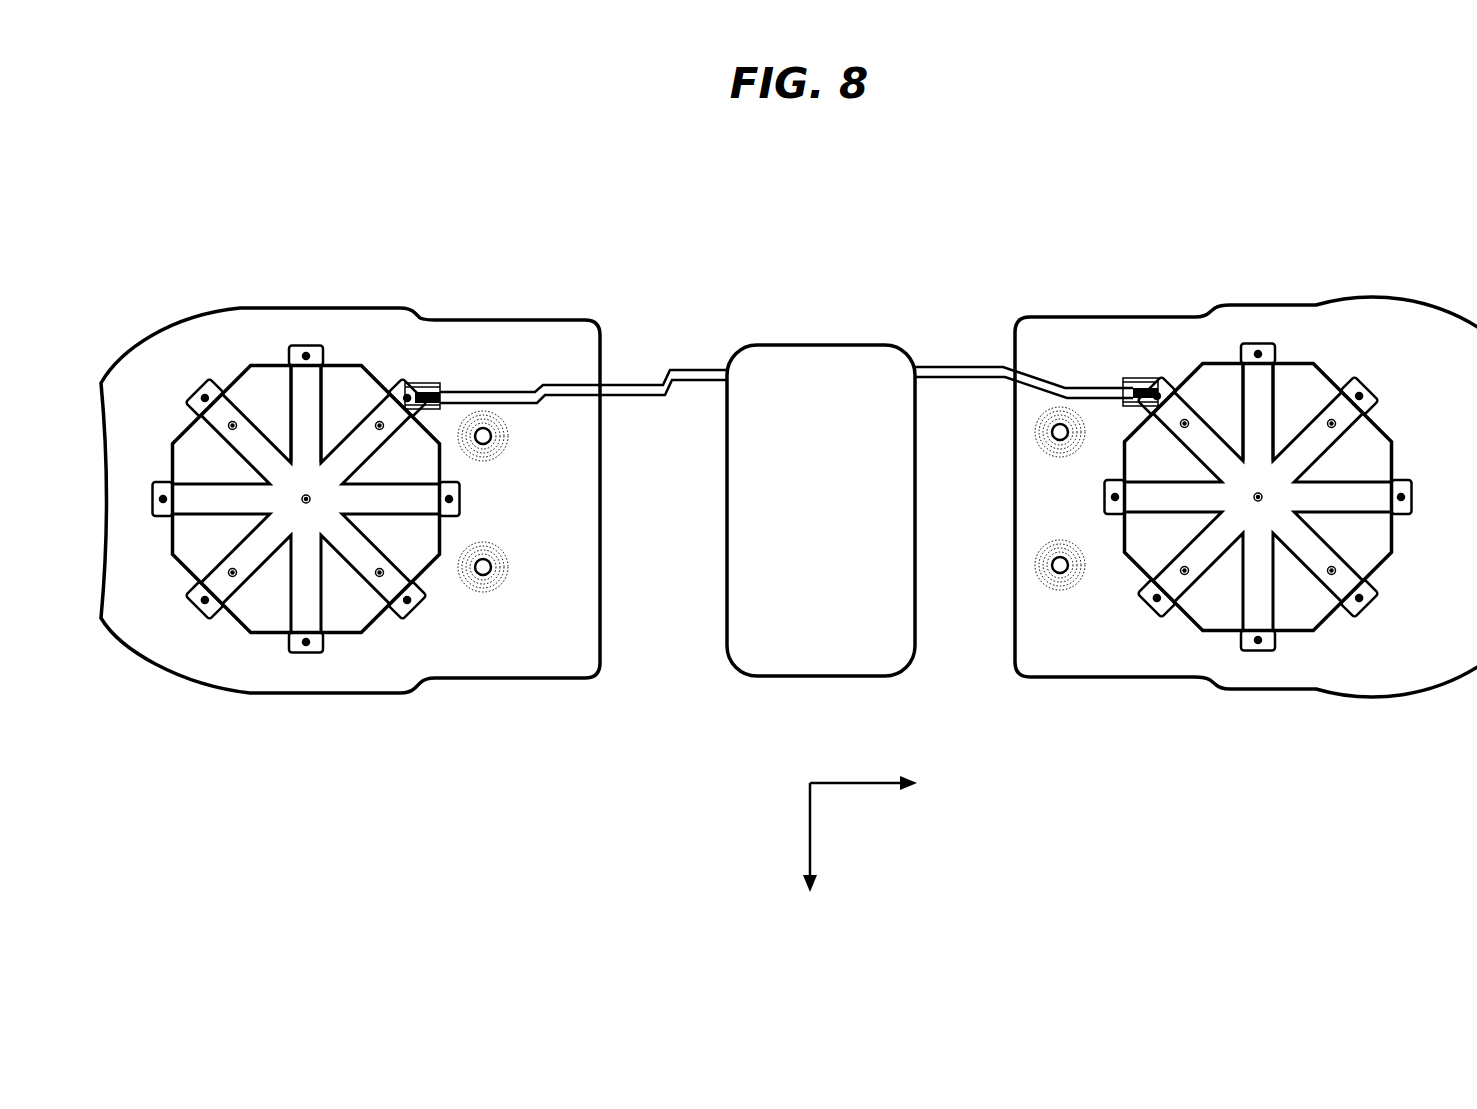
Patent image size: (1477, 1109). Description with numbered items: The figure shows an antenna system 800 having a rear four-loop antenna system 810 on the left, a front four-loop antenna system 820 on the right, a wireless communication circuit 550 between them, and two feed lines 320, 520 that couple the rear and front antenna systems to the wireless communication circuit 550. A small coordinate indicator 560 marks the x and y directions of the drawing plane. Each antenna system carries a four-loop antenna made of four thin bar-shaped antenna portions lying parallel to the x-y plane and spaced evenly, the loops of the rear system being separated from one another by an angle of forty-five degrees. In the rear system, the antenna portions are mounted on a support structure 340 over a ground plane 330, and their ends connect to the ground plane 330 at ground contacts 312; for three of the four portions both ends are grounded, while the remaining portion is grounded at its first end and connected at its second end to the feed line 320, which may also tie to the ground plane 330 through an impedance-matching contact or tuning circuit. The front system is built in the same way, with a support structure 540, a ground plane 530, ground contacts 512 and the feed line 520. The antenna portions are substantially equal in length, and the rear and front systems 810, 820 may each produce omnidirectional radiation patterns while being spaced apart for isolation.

The antenna system 800 is at (790, 246).
The rear four-loop antenna system 810 is at (101, 252).
The front four-loop antenna system 820 is at (1017, 262).
The ground contacts 312 is at (198, 393).
The feed line 320 is at (480, 392).
The ground plane 330 is at (497, 648).
The support structure 340 is at (343, 617).
The ground contacts 512 is at (1264, 345).
The feed line 520 is at (1062, 393).
The ground plane 530 is at (1057, 645).
The support structure 540 is at (1207, 618).
The wireless communication circuit 550 is at (821, 510).
The coordinate system 560 is at (849, 821).